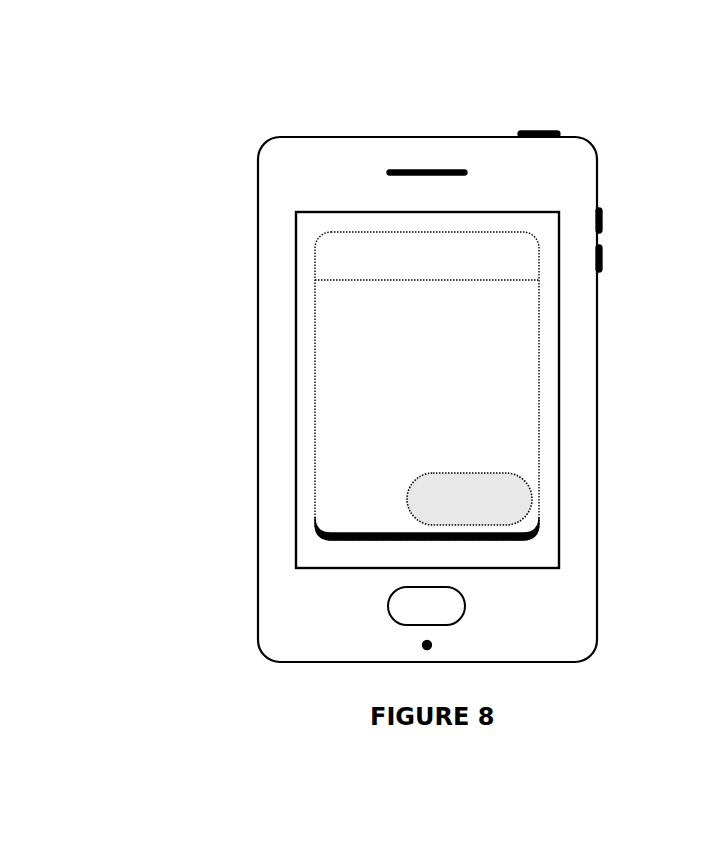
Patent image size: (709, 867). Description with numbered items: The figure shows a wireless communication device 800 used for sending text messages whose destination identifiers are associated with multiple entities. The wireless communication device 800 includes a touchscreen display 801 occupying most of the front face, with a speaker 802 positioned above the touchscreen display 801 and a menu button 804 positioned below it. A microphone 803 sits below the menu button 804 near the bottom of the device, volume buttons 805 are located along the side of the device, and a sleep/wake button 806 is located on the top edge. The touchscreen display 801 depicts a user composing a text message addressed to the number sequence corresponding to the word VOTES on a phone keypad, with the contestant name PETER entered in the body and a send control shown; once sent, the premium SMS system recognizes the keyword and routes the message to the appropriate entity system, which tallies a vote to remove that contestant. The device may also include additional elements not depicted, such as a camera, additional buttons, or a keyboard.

The wireless communication device 800 is at (238, 82).
The touchscreen display 801 is at (492, 210).
The speaker 802 is at (386, 170).
The microphone 803 is at (431, 645).
The menu button 804 is at (389, 611).
The volume buttons 805 is at (604, 218).
The sleep/wake button 806 is at (518, 131).